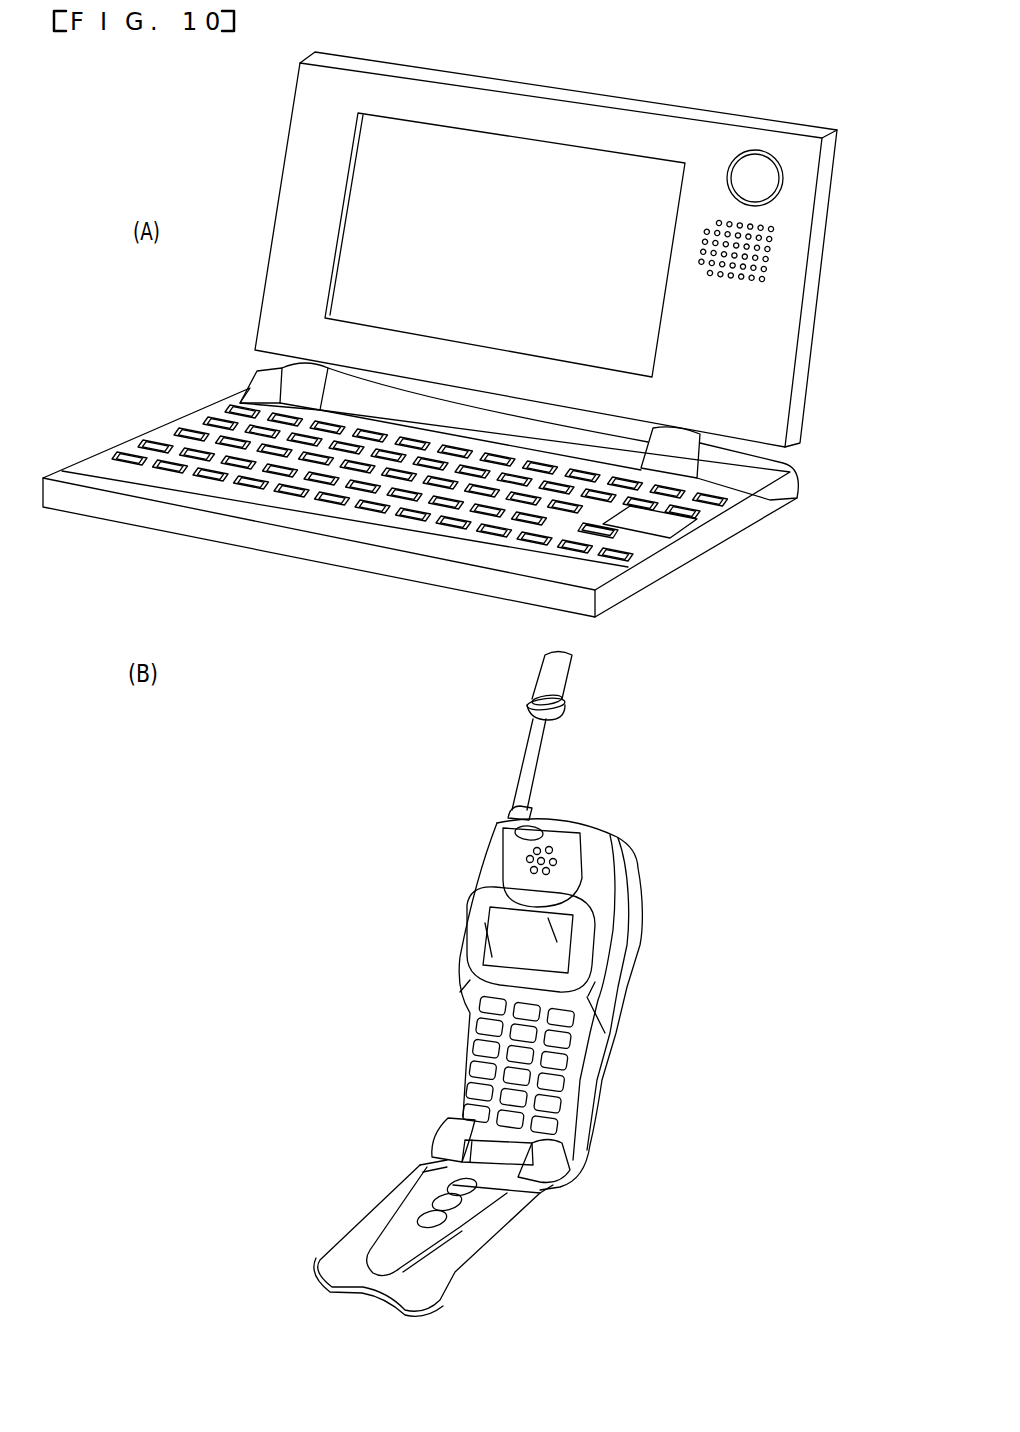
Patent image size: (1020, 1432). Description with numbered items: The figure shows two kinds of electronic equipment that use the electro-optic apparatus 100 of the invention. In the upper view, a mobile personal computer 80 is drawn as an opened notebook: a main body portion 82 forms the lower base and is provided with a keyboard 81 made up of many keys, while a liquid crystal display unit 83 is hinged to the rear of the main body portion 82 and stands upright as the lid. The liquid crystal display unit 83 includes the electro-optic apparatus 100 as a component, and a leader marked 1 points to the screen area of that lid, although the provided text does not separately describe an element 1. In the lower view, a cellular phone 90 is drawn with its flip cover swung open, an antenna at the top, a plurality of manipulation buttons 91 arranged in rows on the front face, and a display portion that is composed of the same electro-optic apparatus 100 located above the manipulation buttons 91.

The personal computer 80 is at (265, 168).
The display device 1 is at (558, 211).
The liquid crystal display unit 83 is at (762, 367).
The keyboard 81 is at (660, 522).
The main body portion 82 is at (392, 538).
The cellular phone 90 is at (400, 958).
The electro-optic apparatus 100 is at (548, 948).
The manipulation buttons 91 is at (562, 1042).